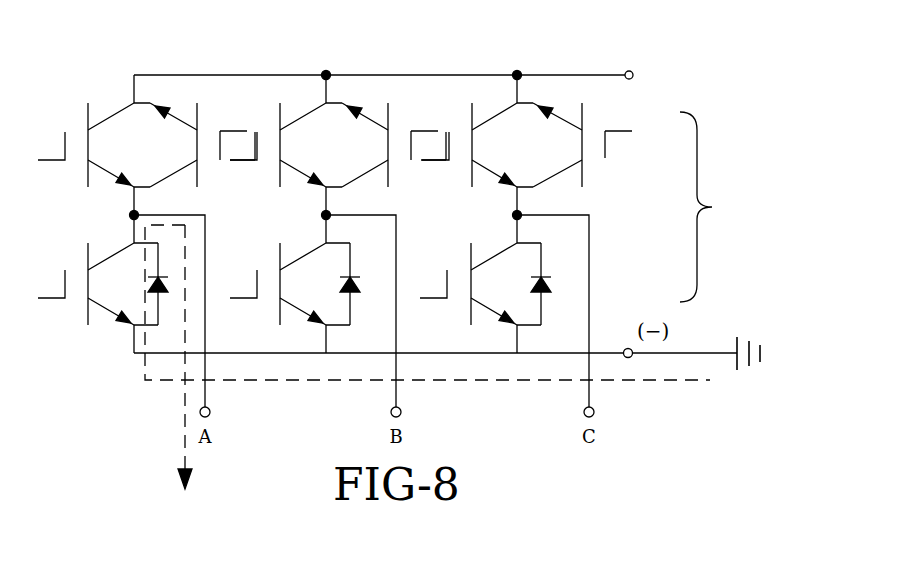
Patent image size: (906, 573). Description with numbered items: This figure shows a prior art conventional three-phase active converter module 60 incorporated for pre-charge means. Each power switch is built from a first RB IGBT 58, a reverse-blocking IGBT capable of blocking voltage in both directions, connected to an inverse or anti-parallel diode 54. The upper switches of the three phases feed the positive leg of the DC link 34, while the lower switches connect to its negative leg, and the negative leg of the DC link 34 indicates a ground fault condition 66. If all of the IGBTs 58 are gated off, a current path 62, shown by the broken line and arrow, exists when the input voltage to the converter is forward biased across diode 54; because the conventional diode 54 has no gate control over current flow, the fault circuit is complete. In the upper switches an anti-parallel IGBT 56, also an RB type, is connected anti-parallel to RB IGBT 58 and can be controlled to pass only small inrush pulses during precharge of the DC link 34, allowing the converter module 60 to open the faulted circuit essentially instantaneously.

The DC link 34 is at (717, 207).
The anti-parallel diode 54 is at (160, 272).
The anti-parallel IGBT 56 is at (203, 110).
The RB IGBT 58 is at (82, 110).
The 3-phase active converter module 60 is at (485, 45).
The current path 62 is at (184, 443).
The ground fault condition 66 is at (720, 340).